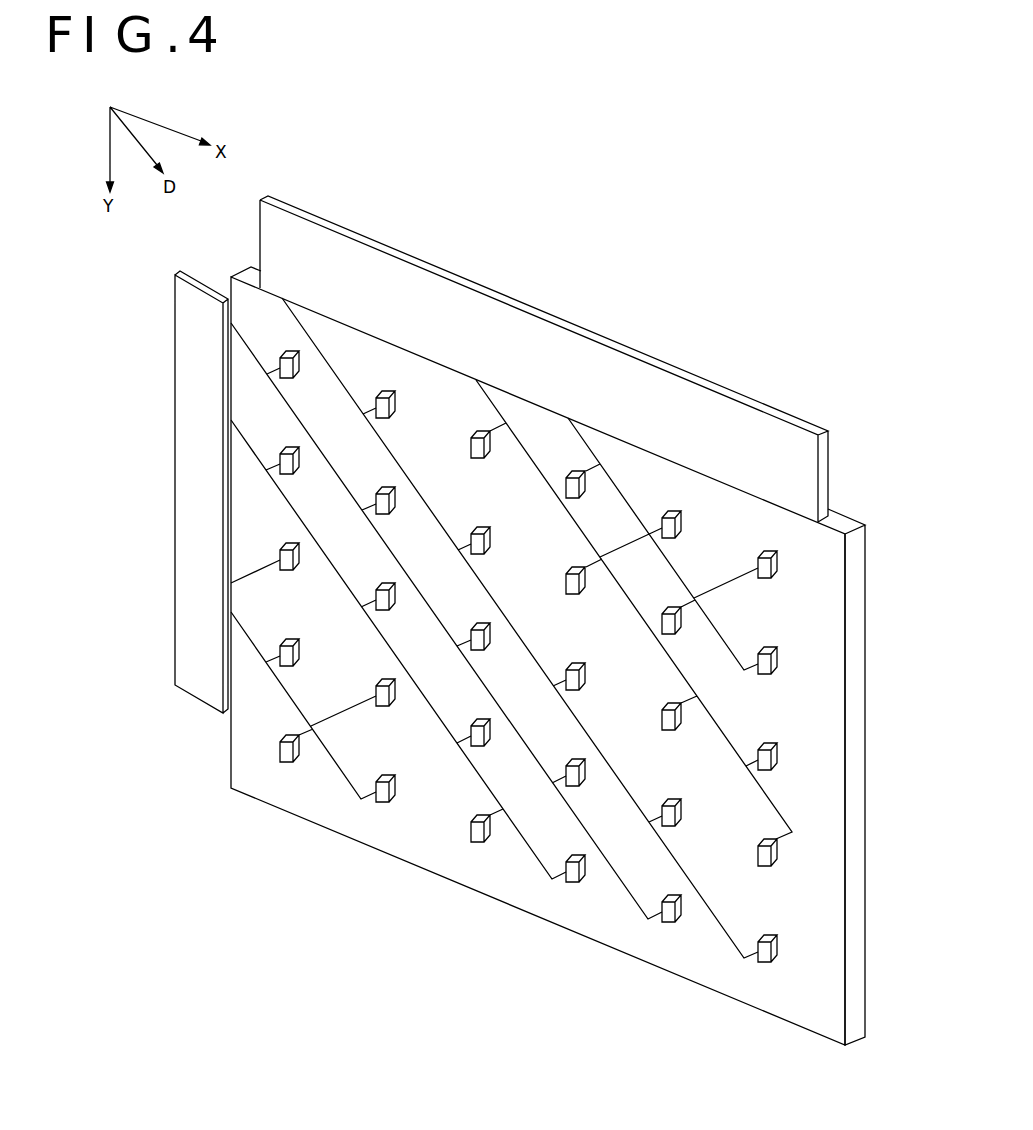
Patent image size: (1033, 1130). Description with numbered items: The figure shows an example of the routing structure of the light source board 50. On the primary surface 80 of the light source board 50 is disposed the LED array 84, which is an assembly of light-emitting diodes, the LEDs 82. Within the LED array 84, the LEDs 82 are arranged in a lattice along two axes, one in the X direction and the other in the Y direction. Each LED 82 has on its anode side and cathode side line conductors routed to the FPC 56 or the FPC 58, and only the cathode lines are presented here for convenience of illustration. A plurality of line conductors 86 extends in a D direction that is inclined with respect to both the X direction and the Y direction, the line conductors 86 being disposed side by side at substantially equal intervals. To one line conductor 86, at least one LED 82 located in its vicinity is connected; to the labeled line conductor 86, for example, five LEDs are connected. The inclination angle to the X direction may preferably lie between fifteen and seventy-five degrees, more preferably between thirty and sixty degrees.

The light source board 50 is at (315, 143).
The FPC 56 is at (748, 420).
The FPC 58 is at (190, 500).
The primary surface 80 is at (820, 796).
The LED 82 is at (396, 404).
The LED array 84 is at (777, 613).
The line conductor 86 is at (714, 916).